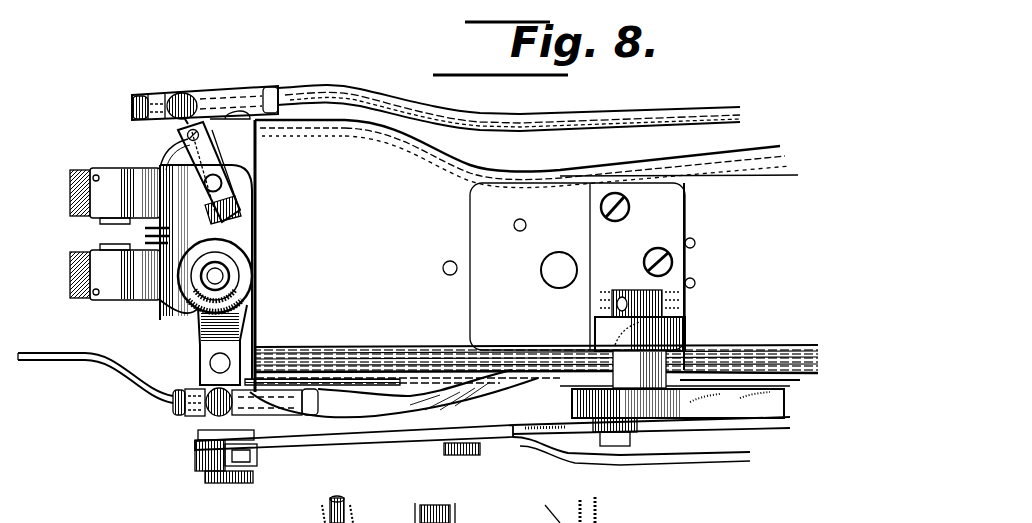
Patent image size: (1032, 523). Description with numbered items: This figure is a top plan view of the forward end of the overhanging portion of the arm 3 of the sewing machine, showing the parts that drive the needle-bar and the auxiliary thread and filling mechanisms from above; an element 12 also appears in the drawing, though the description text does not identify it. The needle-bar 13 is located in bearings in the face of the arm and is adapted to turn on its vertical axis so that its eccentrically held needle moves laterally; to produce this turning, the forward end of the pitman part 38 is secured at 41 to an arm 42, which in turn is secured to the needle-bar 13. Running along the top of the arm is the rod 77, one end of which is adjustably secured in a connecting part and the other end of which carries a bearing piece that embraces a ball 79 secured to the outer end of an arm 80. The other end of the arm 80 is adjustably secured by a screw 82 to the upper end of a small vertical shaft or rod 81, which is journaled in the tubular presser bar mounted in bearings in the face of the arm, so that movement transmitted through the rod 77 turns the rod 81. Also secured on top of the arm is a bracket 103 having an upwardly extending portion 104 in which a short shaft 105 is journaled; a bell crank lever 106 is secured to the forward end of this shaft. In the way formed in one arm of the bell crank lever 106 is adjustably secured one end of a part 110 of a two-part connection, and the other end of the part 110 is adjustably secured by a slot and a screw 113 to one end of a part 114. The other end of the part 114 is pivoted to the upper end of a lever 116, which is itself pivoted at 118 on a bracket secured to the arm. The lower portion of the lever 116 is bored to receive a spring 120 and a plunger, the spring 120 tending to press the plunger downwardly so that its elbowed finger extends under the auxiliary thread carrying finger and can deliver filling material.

The overhanging portion of the arm 3 is at (536, 256).
The lower frame member 12 is at (407, 509).
The needle-bar 13 is at (216, 275).
The part of the pitman 38 is at (442, 419).
The securing point of pitman to arm 41 is at (210, 394).
The arm 42 is at (200, 332).
The rod 77 is at (378, 98).
The ball 79 is at (180, 94).
The arm 80 is at (182, 144).
The small vertical shaft or rod 81 is at (222, 185).
The screw 82 is at (200, 203).
The bracket 103 is at (636, 207).
The upwardly extending portion of the bracket 104 is at (598, 333).
The short shaft 105 is at (612, 292).
The bell crank lever 106 is at (637, 407).
The part of two-part connection 110 is at (527, 425).
The screw 113 is at (470, 449).
The part of two-part connection 114 is at (338, 446).
The lever 116 is at (200, 456).
The pivot of lever 118 is at (205, 481).
The spring 120 is at (598, 522).